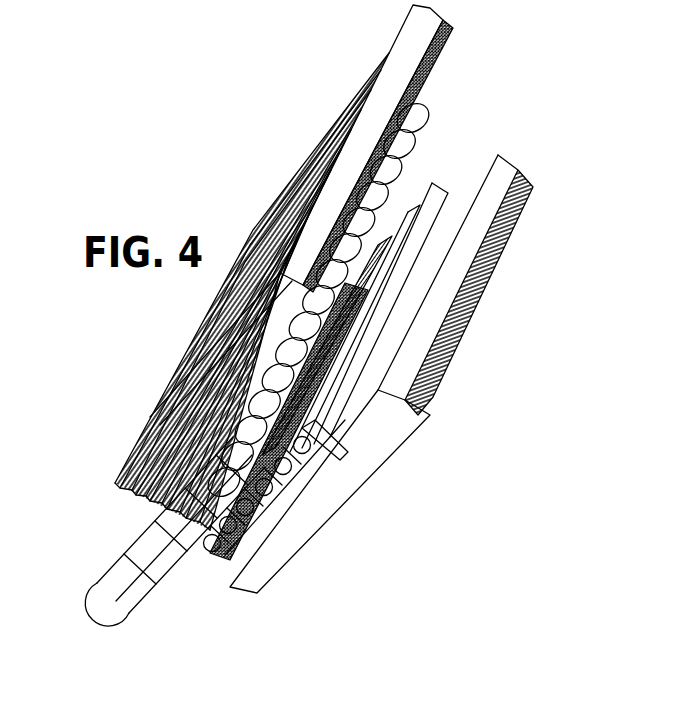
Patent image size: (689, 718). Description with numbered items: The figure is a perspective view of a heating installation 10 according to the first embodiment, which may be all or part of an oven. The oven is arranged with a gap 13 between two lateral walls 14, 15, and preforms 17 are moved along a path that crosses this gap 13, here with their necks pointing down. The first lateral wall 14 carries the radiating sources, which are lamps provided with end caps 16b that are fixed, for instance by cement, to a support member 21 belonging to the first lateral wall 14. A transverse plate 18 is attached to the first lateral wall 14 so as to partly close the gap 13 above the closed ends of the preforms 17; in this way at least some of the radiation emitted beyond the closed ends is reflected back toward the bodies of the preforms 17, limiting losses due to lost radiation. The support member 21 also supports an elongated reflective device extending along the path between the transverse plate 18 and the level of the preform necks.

The heating installation 10 is at (470, 363).
The gap 13 is at (140, 493).
The first lateral wall 14 is at (287, 543).
The second lateral wall 15 is at (115, 483).
The end caps 16b is at (215, 573).
The preforms 17 is at (112, 588).
The transverse plate 18 is at (413, 165).
The support member 21 is at (500, 172).